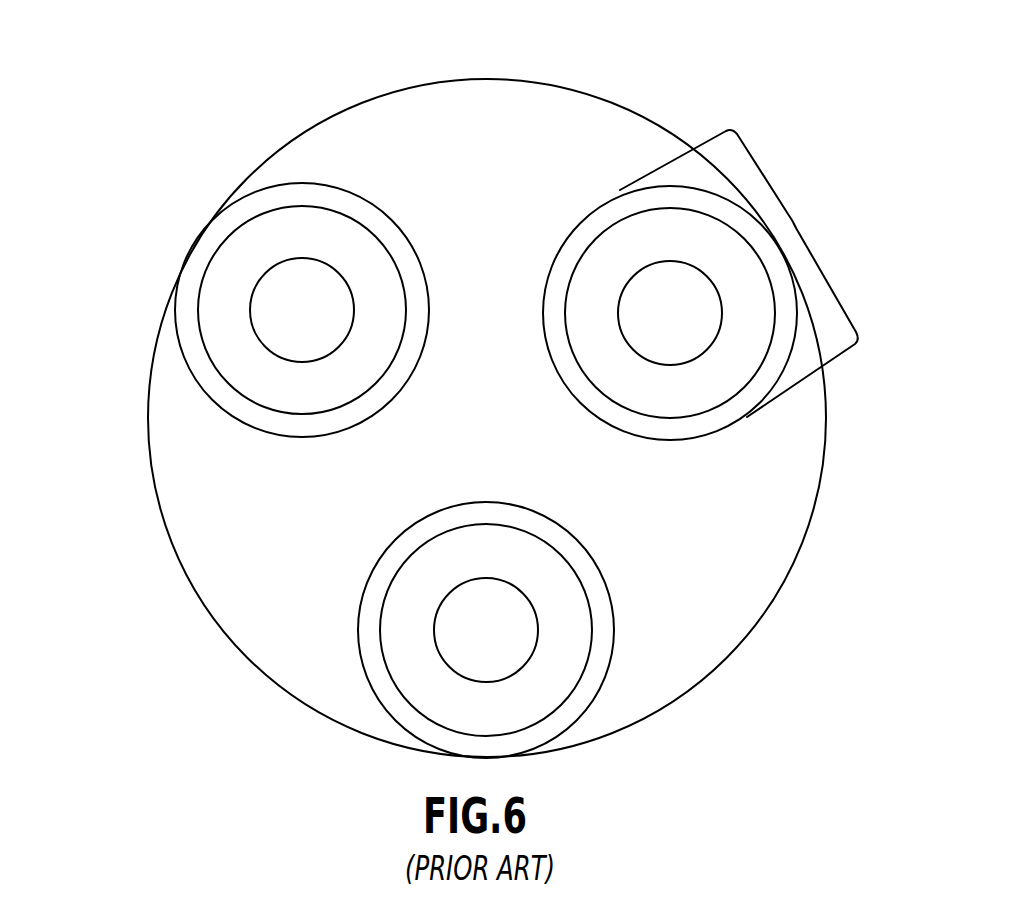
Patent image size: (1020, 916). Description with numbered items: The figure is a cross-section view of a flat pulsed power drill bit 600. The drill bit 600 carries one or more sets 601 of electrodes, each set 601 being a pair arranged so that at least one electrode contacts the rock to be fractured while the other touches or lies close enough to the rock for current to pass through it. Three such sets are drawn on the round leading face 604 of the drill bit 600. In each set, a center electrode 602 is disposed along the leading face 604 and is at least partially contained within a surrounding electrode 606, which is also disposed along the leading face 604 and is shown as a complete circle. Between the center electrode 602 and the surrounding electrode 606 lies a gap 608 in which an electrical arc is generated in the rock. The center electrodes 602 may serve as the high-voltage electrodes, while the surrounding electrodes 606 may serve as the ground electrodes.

The pulsed power drill bit 600 is at (750, 80).
The set of electrodes 601 is at (797, 226).
The center electrode 602 is at (252, 295).
The leading face 604 is at (392, 120).
The surrounding electrode 606 is at (212, 403).
The gap 608 is at (240, 250).